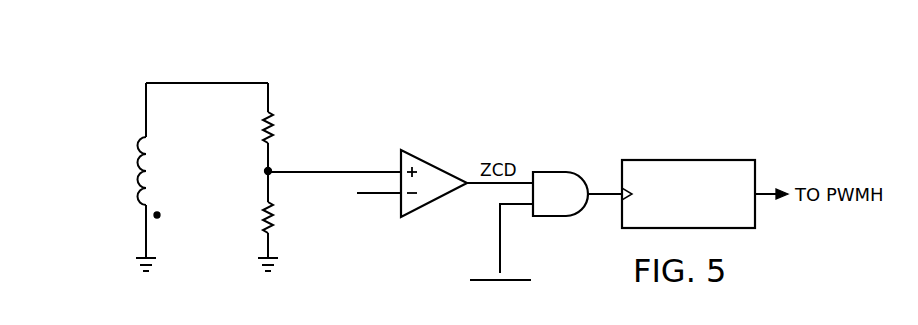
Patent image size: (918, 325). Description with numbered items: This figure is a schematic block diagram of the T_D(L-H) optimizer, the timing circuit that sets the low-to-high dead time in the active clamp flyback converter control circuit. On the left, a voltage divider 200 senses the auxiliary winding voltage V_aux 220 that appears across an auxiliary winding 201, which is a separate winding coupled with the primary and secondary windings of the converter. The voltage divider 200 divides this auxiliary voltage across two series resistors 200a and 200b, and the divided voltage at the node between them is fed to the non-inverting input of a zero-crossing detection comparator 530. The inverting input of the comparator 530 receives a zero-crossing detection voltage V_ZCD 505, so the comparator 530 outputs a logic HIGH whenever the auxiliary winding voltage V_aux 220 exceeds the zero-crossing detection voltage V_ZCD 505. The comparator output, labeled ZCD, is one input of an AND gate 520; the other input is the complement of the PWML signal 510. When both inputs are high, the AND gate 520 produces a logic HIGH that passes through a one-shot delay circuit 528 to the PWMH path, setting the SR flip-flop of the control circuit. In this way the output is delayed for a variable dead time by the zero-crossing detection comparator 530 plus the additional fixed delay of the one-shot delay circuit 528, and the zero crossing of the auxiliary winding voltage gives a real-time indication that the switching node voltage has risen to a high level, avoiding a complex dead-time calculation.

The voltage divider 200 is at (268, 64).
The auxiliary winding voltage V_aux 220 is at (168, 82).
The auxiliary winding 201 is at (128, 181).
The resistor 200a is at (263, 122).
The resistor 200b is at (263, 222).
The zero-crossing detection comparator 530 is at (433, 165).
The zero-crossing detection voltage V_ZCD 505 is at (379, 195).
The AND gate 520 is at (556, 172).
The PWML signal 510 is at (502, 236).
The one-shot delay circuit 528 is at (688, 160).